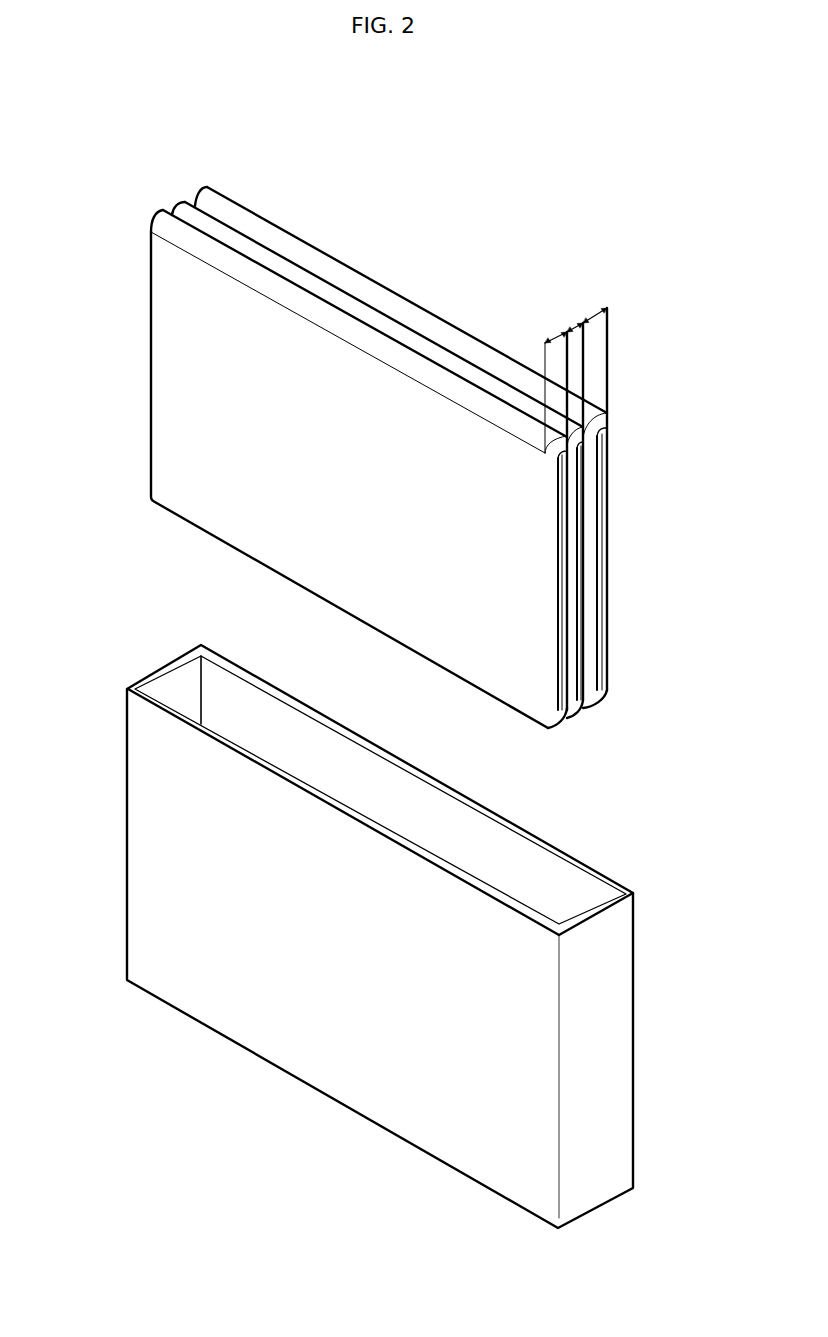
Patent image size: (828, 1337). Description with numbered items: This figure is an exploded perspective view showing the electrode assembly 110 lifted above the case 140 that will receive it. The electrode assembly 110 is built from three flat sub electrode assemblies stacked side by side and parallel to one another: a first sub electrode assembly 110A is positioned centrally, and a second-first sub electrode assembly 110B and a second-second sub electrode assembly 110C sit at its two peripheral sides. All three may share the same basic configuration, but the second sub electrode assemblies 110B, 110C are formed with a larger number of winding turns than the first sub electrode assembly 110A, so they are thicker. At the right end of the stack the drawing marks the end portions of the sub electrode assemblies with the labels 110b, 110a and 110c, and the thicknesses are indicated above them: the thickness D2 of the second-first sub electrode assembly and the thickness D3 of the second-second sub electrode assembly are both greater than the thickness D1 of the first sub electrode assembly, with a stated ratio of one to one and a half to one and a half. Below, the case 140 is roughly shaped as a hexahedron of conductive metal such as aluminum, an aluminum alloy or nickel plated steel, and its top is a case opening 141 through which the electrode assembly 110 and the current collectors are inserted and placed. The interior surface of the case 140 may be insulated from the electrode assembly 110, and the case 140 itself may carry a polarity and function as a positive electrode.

The electrode assembly 110 is at (87, 128).
The second-first sub electrode assembly 110B is at (158, 218).
The first sub electrode assembly 110A is at (177, 205).
The second-second sub electrode assembly 110C is at (222, 205).
The second-first sub electrode assembly 110b is at (568, 607).
The first sub electrode assembly 110a is at (588, 545).
The second-second sub electrode assembly 110c is at (607, 498).
The thickness of the first sub electrode assembly D1 is at (570, 317).
The thickness of the second-first sub electrode assembly D2 is at (549, 328).
The thickness of the second-second sub electrode assembly D3 is at (593, 305).
The case 140 is at (345, 1092).
The case opening 141 is at (234, 703).